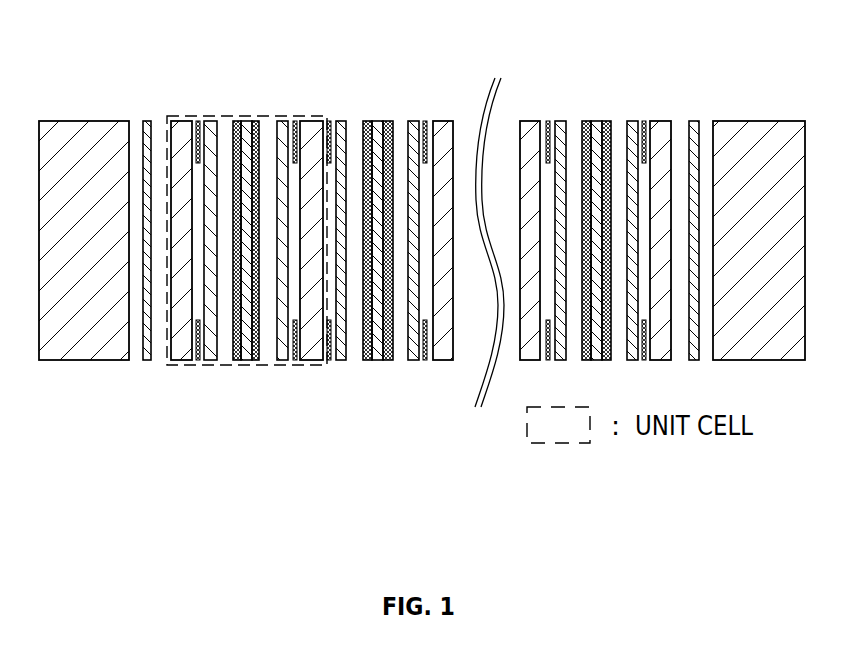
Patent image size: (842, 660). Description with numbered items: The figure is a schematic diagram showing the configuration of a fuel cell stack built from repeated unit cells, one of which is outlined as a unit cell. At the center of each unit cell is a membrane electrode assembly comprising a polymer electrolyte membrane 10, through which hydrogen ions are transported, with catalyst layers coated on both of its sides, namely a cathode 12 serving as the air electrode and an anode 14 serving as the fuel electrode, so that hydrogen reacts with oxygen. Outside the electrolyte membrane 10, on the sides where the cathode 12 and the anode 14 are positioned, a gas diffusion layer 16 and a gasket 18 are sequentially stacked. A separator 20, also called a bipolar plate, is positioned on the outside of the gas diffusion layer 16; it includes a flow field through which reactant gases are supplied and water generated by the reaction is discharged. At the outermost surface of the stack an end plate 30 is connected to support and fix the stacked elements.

The polymer electrolyte membrane 10 is at (263, 307).
The cathode (air electrode) 12 is at (284, 294).
The anode (fuel electrode) 14 is at (228, 307).
The gas diffusion layer 16 is at (266, 191).
The gasket 18 is at (262, 193).
The separator (bipolar plate) 20 is at (234, 301).
The end plate 30 is at (84, 193).